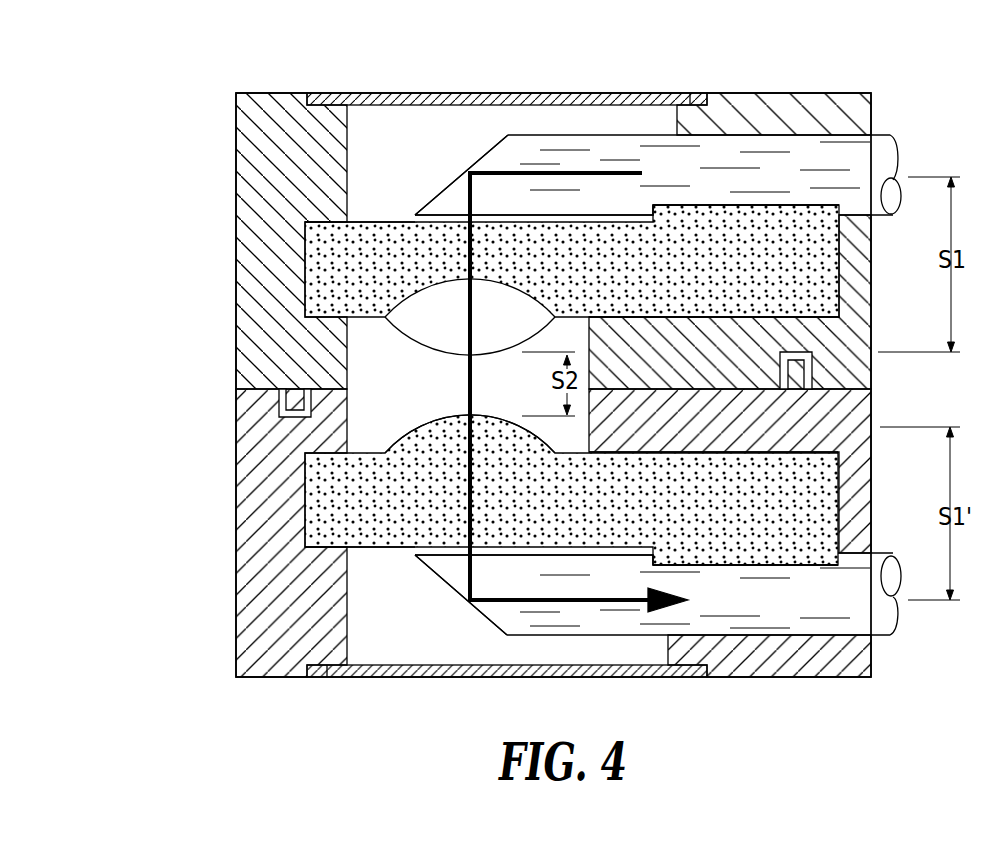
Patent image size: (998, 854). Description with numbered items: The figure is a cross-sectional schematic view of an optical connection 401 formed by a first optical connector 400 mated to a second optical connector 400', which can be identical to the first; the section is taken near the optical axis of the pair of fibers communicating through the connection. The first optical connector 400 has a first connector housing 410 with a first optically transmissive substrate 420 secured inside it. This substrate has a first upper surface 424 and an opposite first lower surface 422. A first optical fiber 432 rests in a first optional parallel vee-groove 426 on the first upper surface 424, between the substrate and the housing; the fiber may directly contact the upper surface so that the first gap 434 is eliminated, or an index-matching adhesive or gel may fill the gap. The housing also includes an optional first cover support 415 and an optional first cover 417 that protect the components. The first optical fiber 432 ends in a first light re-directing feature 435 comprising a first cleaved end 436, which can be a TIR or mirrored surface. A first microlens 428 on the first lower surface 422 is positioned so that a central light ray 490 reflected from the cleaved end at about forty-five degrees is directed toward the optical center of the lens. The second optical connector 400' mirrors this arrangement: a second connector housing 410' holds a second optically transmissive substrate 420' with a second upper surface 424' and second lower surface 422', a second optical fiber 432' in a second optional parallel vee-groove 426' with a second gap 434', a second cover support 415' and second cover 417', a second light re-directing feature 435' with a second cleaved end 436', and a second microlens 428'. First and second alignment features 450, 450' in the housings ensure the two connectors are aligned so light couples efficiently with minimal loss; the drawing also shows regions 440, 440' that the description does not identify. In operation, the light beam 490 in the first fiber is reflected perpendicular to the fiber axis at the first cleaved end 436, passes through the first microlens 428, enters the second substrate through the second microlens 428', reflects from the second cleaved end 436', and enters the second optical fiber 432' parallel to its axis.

The optical connection 401 is at (150, 58).
The first optical connector 400 is at (528, 206).
The second optical connector 400' is at (512, 558).
The first connector housing 410 is at (730, 216).
The second connector housing 410' is at (730, 558).
The first cover support 415 is at (694, 75).
The second cover support 415' is at (318, 699).
The first cover 417 is at (507, 70).
The second cover 417' is at (507, 696).
The first optically transmissive substrate 420 is at (506, 261).
The second optically transmissive substrate 420' is at (505, 490).
The first lower surface 422 is at (714, 298).
The second lower surface 422' is at (713, 473).
The first upper surface 424 is at (360, 196).
The second upper surface 424' is at (360, 575).
The first optional parallel vee-groove 426 is at (746, 225).
The second optional parallel vee-groove 426' is at (745, 546).
The first microlens 428 is at (458, 347).
The second microlens 428' is at (458, 422).
The first optical fiber 432 is at (674, 154).
The second optical fiber 432' is at (681, 612).
The first gap 434 is at (603, 171).
The second gap 434' is at (598, 595).
The first light re-directing feature 435 is at (461, 123).
The second light re-directing feature 435' is at (461, 644).
The first cleaved end 436 is at (461, 172).
The second cleaved end 436' is at (458, 599).
The upper left housing block 440 is at (262, 241).
The lower left housing block 440' is at (262, 533).
The first alignment feature 450 is at (231, 402).
The second alignment feature 450' is at (862, 375).
The central light ray 490 is at (608, 173).